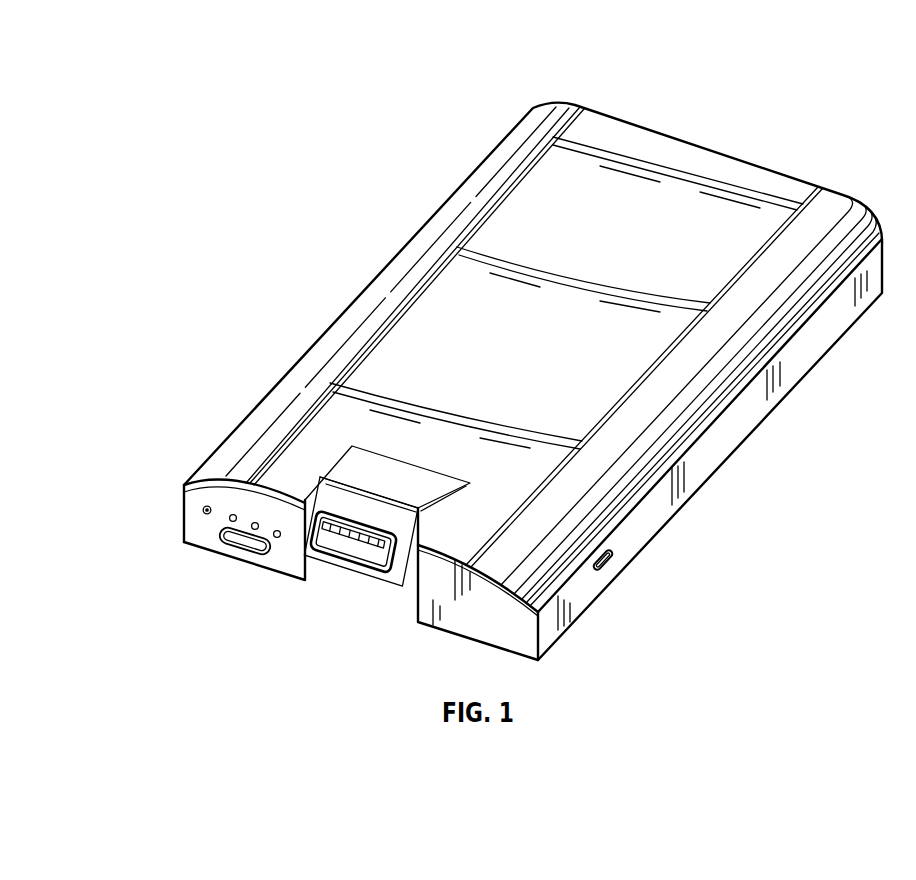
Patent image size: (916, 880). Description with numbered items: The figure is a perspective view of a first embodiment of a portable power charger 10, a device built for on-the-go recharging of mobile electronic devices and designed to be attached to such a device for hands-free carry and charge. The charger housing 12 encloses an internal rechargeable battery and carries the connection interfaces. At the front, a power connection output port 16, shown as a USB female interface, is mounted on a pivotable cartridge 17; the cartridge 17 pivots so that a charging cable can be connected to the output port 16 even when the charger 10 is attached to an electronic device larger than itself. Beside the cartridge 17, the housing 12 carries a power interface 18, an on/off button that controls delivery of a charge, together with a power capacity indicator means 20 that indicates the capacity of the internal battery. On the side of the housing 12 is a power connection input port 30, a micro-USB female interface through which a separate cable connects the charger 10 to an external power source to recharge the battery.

The portable power charger 10 is at (496, 366).
The charger housing 12 is at (547, 103).
The power connection output port 16 is at (380, 577).
The pivotable cartridge 17 is at (441, 500).
The power interface 18 is at (243, 538).
The power capacity indicator means 20 is at (204, 511).
The power connection input port 30 is at (613, 560).